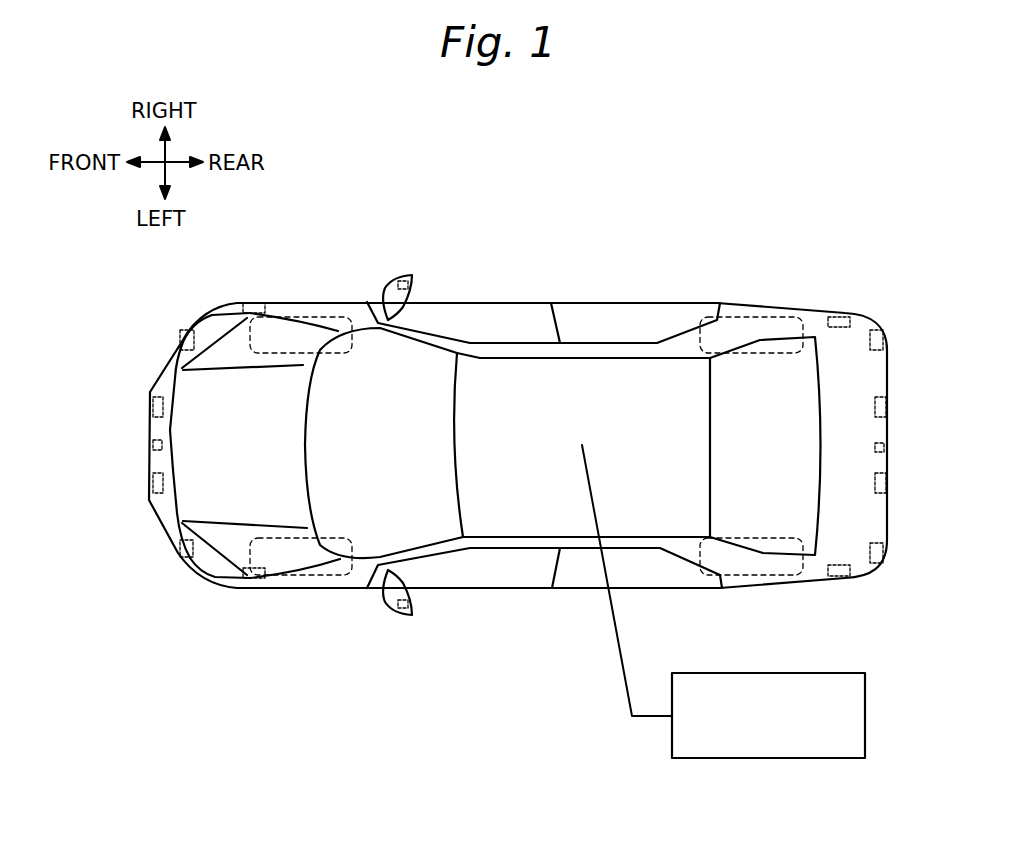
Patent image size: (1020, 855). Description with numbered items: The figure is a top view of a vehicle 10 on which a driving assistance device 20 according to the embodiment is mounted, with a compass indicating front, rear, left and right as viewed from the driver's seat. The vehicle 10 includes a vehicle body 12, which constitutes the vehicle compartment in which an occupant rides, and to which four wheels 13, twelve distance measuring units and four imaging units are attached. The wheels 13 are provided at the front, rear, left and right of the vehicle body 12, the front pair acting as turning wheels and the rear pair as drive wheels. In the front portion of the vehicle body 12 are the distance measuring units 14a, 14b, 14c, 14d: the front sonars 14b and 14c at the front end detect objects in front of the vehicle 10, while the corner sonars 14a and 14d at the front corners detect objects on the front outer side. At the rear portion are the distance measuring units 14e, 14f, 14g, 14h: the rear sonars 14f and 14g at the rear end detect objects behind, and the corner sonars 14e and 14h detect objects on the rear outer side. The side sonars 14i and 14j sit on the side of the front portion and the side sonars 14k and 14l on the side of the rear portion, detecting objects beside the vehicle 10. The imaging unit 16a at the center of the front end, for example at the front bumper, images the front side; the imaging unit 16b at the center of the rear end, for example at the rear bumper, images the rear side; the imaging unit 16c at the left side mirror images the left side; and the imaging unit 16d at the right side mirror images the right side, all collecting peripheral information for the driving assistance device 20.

The vehicle 10 is at (563, 262).
The vehicle body 12 is at (655, 303).
The wheels 13 is at (335, 316).
The distance measuring unit 14a is at (180, 548).
The distance measuring unit 14b is at (152, 484).
The distance measuring unit 14c is at (152, 405).
The distance measuring unit 14d is at (180, 338).
The distance measuring unit 14e is at (885, 552).
The distance measuring unit 14f is at (887, 485).
The distance measuring unit 14g is at (887, 405).
The distance measuring unit 14h is at (885, 338).
The distance measuring unit 14i is at (254, 580).
The distance measuring unit 14j is at (254, 302).
The distance measuring unit 14k is at (840, 578).
The distance measuring unit 14l is at (840, 316).
The imaging unit 16a is at (150, 447).
The imaging unit 16b is at (884, 447).
The imaging unit 16c is at (405, 614).
The imaging unit 16d is at (405, 276).
The driving assistance device 20 is at (795, 758).